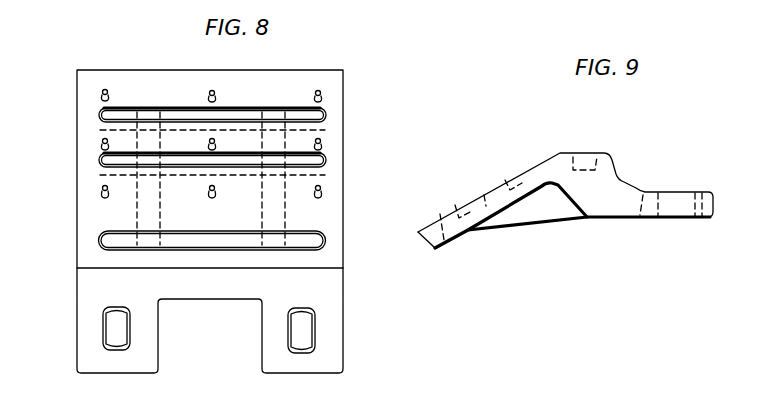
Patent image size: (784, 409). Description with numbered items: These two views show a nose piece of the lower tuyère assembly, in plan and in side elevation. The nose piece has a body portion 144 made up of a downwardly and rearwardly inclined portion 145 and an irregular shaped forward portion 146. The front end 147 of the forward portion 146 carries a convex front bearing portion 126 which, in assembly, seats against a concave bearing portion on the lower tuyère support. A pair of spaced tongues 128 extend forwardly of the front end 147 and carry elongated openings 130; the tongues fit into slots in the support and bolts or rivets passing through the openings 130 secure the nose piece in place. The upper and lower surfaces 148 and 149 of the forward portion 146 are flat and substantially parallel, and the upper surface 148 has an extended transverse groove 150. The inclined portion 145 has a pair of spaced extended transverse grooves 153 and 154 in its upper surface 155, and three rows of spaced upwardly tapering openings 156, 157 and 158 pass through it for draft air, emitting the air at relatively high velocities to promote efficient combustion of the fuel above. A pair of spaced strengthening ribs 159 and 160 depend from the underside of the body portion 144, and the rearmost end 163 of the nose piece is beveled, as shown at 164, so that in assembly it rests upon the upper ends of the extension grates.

In FIG. 9, the convex front bearing portion 126 is at (623, 178).
In FIG. 8, the tongues 128 is at (157, 372).
In FIG. 9, the tongues 128 is at (713, 200).
In FIG. 8, the elongated openings 130 is at (112, 330).
In FIG. 9, the elongated openings 130 is at (683, 212).
In FIG. 8, the body portion 144 is at (77, 275).
In FIG. 9, the body portion 144 is at (593, 186).
In FIG. 8, the inclined portion 145 is at (77, 198).
In FIG. 9, the inclined portion 145 is at (470, 230).
In FIG. 8, the forward portion 146 is at (343, 263).
In FIG. 9, the forward portion 146 is at (618, 207).
In FIG. 8, the front end 147 is at (202, 287).
In FIG. 9, the front end 147 is at (642, 193).
In FIG. 9, the upper surface 148 is at (610, 157).
In FIG. 9, the lower surface 149 is at (630, 215).
In FIG. 8, the transverse groove 150 is at (218, 247).
In FIG. 9, the transverse groove 150 is at (598, 163).
In FIG. 8, the transverse groove 153 is at (182, 172).
In FIG. 9, the transverse groove 153 is at (508, 180).
In FIG. 8, the transverse groove 154 is at (175, 120).
In FIG. 9, the transverse groove 154 is at (466, 217).
In FIG. 8, the upper surface 155 is at (90, 222).
In FIG. 9, the upper surface 155 is at (547, 157).
In FIG. 8, the upwardly tapering openings 156 is at (102, 187).
In FIG. 9, the upwardly tapering openings 156 is at (523, 180).
In FIG. 8, the upwardly tapering openings 157 is at (102, 142).
In FIG. 9, the upwardly tapering openings 157 is at (485, 207).
In FIG. 8, the upwardly tapering openings 158 is at (102, 93).
In FIG. 9, the upwardly tapering openings 158 is at (440, 214).
In FIG. 8, the strengthening rib 159 is at (229, 178).
In FIG. 9, the strengthening rib 159 is at (532, 215).
In FIG. 8, the strengthening rib 160 is at (272, 215).
In FIG. 9, the rearmost end 163 is at (418, 236).
In FIG. 9, the bevel 164 is at (434, 247).